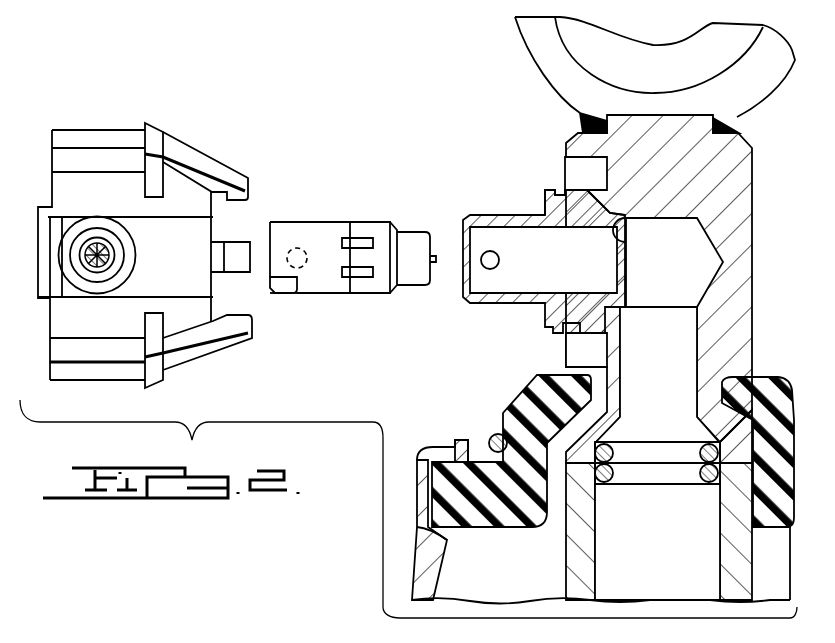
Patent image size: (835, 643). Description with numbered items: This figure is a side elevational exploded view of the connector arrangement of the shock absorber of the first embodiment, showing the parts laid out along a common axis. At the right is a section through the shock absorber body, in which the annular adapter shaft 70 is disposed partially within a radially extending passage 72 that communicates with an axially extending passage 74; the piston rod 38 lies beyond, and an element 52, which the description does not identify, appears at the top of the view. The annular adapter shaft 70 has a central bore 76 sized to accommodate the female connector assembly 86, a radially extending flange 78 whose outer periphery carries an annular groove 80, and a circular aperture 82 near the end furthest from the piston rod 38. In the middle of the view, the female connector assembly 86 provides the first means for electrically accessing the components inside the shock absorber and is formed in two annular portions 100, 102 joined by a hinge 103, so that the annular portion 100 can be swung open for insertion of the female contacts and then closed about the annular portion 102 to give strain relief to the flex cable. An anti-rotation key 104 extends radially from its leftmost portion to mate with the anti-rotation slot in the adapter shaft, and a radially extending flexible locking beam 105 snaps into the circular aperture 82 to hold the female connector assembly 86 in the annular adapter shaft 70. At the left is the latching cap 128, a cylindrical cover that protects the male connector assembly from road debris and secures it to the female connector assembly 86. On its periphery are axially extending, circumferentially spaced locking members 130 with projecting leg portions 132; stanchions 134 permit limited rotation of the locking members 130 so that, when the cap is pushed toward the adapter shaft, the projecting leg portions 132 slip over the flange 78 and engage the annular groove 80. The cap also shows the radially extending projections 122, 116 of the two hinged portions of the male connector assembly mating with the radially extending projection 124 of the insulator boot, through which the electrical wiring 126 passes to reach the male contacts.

The piston rod 38 is at (733, 312).
The cap 52 is at (580, 42).
The annular adapter shaft 70 is at (487, 302).
The radially extending passage 72 is at (613, 228).
The axially extending passage 74 is at (677, 345).
The central bore 76 is at (511, 235).
The radially extending flange 78 is at (545, 203).
The annular groove 80 is at (565, 192).
The circular aperture 82 is at (498, 258).
The female connector assembly 86 is at (345, 304).
The annular portion 100 is at (322, 230).
The annular portion 102 is at (415, 233).
The hinge 103 is at (368, 270).
The anti-rotation key 104 is at (285, 293).
The flexible locking beam 105 is at (297, 248).
The radially extending projection 116 is at (120, 285).
The radially extending projection 122 is at (127, 262).
The radially extending projection 124 is at (100, 225).
The electrical wiring 126 is at (108, 248).
The latching cap 128 is at (67, 193).
The locking members 130 is at (92, 137).
The projecting leg portions 132 is at (178, 155).
The stanchions 134 is at (160, 178).